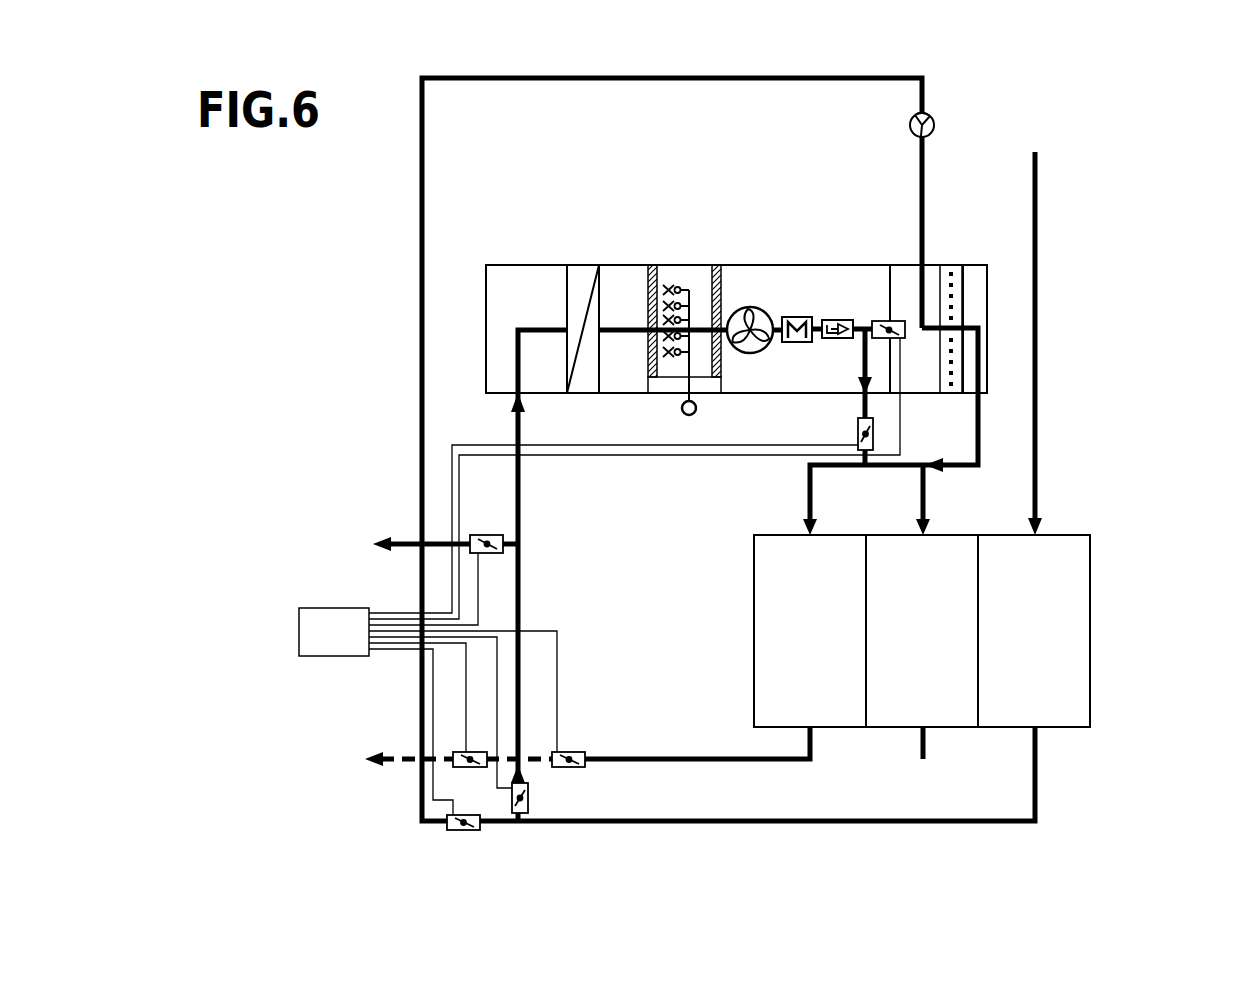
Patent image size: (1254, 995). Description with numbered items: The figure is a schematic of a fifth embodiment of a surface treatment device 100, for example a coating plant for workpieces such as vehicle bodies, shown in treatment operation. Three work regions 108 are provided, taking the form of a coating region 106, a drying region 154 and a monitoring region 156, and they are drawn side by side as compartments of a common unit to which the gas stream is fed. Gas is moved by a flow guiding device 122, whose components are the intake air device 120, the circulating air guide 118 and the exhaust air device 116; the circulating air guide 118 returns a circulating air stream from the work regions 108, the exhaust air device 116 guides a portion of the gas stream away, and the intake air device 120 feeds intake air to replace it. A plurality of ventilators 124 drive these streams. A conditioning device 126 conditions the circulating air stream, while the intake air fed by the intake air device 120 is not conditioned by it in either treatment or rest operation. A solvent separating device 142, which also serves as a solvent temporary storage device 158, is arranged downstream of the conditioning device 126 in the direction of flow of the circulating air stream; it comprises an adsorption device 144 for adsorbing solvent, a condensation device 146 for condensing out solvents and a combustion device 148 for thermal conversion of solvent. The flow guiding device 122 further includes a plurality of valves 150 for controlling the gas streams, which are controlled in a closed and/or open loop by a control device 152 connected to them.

The surface treatment device 100 is at (972, 103).
The coating region 106 is at (798, 700).
The work region 108 is at (843, 710).
The exhaust air device 116 is at (412, 544).
The circulating air guide 118 is at (523, 492).
The intake air device 120 is at (1040, 483).
The flow guiding device 122 is at (1022, 136).
The ventilator 124 is at (910, 128).
The conditioning device 126 is at (711, 246).
The solvent separating device 142 is at (950, 265).
The adsorption device 144 is at (955, 360).
The condensation device 146 is at (955, 367).
The combustion device 148 is at (955, 383).
The valve 150 is at (872, 334).
The control device 152 is at (310, 636).
The drying region 154 is at (955, 622).
The monitoring region 156 is at (1057, 565).
The solvent temporary storage device 158 is at (955, 290).